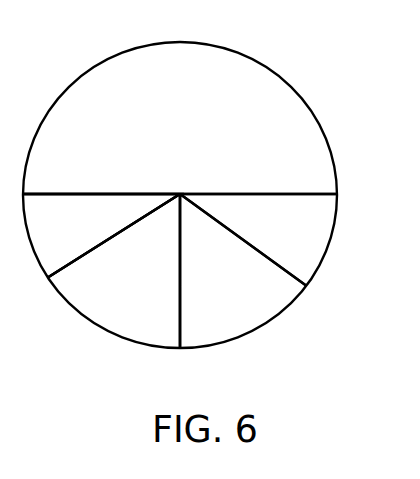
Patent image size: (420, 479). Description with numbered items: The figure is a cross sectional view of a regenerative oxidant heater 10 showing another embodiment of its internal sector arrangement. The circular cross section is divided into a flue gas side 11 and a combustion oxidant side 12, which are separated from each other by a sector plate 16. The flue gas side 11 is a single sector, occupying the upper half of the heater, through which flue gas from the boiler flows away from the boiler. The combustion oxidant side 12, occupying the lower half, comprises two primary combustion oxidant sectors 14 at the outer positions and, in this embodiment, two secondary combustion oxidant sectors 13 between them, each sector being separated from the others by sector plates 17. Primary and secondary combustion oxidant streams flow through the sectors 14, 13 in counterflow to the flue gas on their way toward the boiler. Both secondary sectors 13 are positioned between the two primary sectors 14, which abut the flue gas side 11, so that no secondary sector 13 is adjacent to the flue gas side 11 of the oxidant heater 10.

The regenerative oxidant heater 10 is at (303, 93).
The flue gas side 11 is at (180, 135).
The combustion oxidant side 12 is at (345, 343).
The secondary combustion oxidant sector 13 is at (177, 271).
The primary combustion oxidant sector 14 is at (161, 236).
The sector plate 16 is at (130, 194).
The sector plate 17 is at (180, 225).